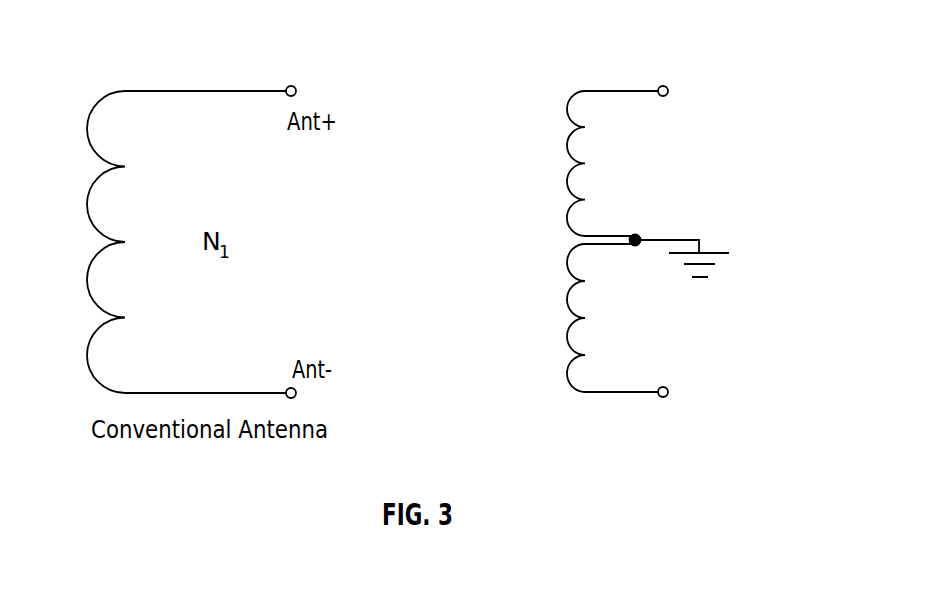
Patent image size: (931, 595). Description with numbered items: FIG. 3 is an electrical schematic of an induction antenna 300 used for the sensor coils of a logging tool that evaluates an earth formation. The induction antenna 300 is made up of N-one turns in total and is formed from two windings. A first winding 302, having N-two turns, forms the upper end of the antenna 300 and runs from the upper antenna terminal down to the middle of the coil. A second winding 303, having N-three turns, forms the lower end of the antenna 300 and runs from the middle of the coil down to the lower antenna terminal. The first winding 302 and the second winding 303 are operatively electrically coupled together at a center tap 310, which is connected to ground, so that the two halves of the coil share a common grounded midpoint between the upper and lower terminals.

The induction antenna 300 is at (646, 257).
The first winding 302 is at (567, 103).
The second winding 303 is at (567, 372).
The center tap 310 is at (642, 239).